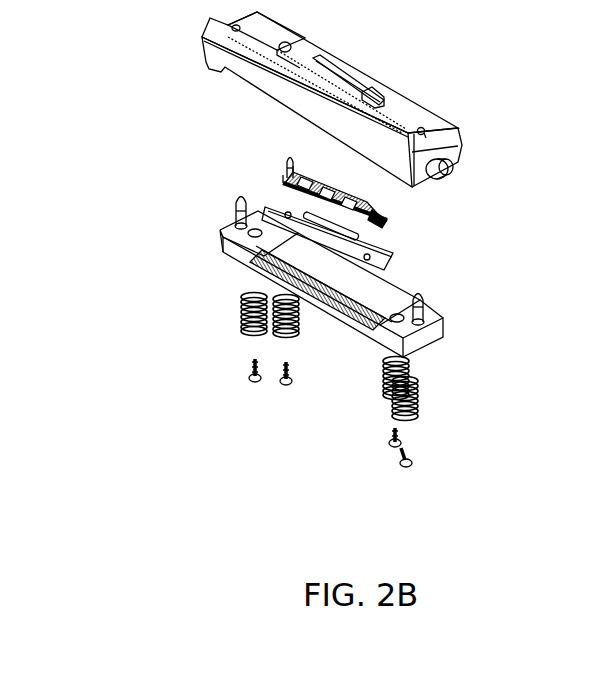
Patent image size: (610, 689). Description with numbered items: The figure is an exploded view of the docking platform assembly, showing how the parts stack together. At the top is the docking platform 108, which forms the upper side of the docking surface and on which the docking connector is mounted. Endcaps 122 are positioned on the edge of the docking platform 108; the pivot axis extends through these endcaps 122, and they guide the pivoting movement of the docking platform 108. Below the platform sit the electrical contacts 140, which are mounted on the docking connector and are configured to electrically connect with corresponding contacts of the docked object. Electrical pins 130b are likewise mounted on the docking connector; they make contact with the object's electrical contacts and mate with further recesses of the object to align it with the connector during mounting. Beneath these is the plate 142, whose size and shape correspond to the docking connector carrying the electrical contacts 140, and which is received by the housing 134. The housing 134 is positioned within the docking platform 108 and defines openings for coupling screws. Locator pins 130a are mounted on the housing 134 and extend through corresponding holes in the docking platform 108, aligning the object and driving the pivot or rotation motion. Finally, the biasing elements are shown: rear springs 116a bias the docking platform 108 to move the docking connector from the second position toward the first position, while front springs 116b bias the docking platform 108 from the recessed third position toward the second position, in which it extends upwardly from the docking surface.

The docking platform 108 is at (417, 118).
The endcaps 122 is at (452, 176).
The electrical contacts 140 is at (352, 192).
The electrical pins 130b is at (285, 168).
The plate 142 is at (400, 265).
The housing 134 is at (445, 334).
The locator pins 130a is at (230, 213).
The front springs 116b is at (240, 306).
The rear springs 116a is at (289, 334).